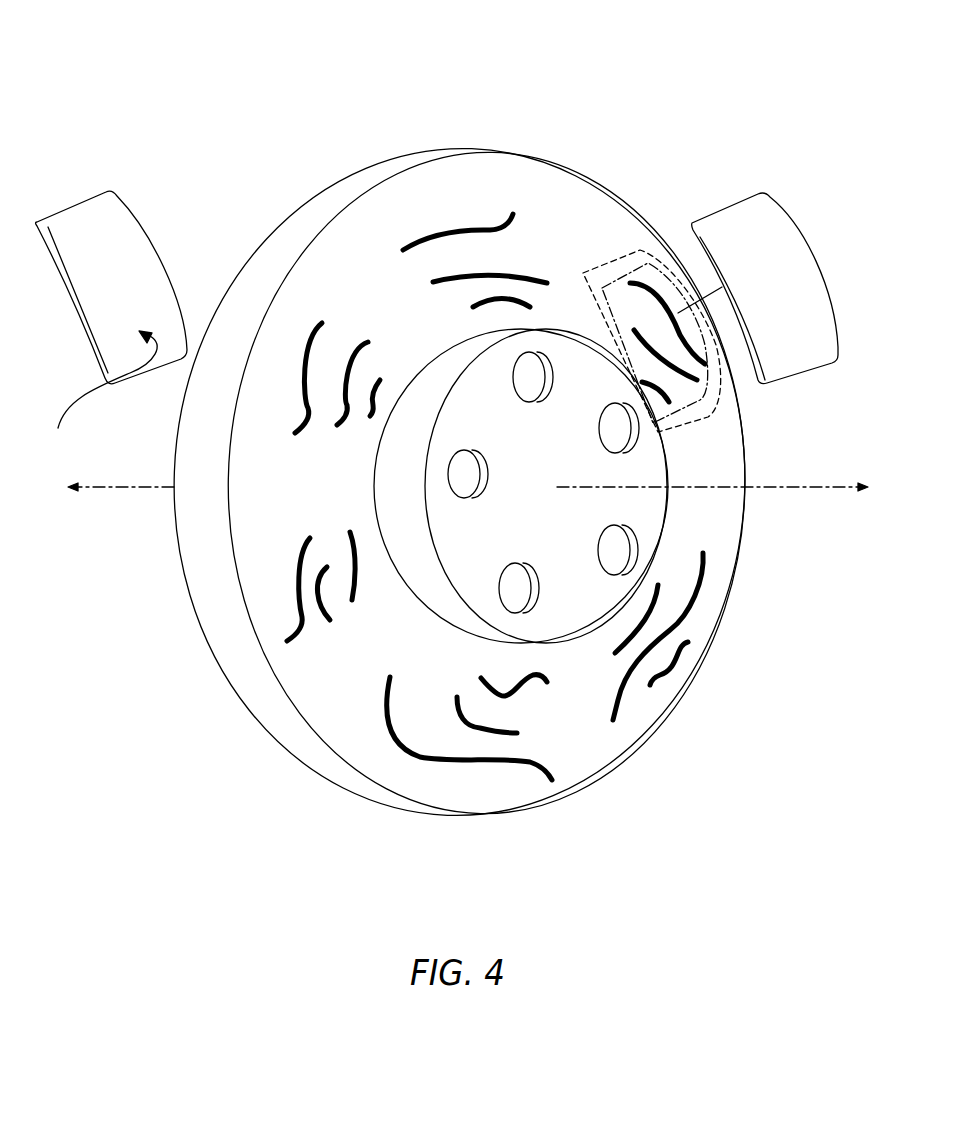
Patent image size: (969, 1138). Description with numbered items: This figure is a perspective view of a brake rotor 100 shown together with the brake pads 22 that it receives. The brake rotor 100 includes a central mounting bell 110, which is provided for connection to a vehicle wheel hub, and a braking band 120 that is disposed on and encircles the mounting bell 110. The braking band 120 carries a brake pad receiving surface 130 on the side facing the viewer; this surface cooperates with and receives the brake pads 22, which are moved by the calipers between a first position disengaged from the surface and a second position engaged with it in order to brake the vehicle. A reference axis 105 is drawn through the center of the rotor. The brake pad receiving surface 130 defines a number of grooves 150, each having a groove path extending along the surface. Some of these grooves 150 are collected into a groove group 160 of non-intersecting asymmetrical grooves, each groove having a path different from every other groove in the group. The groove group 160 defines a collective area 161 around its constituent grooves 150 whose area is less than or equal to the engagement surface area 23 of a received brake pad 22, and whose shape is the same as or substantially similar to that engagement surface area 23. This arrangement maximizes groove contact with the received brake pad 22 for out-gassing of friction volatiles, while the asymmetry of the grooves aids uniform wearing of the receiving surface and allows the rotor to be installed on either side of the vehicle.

The brake rotor 100 is at (247, 62).
The braking band 120 is at (530, 157).
The mounting bell 110 is at (427, 565).
The first brake pad receiving surface 130 is at (378, 303).
The groove group 160 is at (634, 258).
The collective area 161 is at (612, 273).
The groove 150 is at (681, 380).
The axis of rotation 105 is at (815, 489).
The brake pad 22 is at (143, 223).
The engagement surface area 23 is at (107, 393).